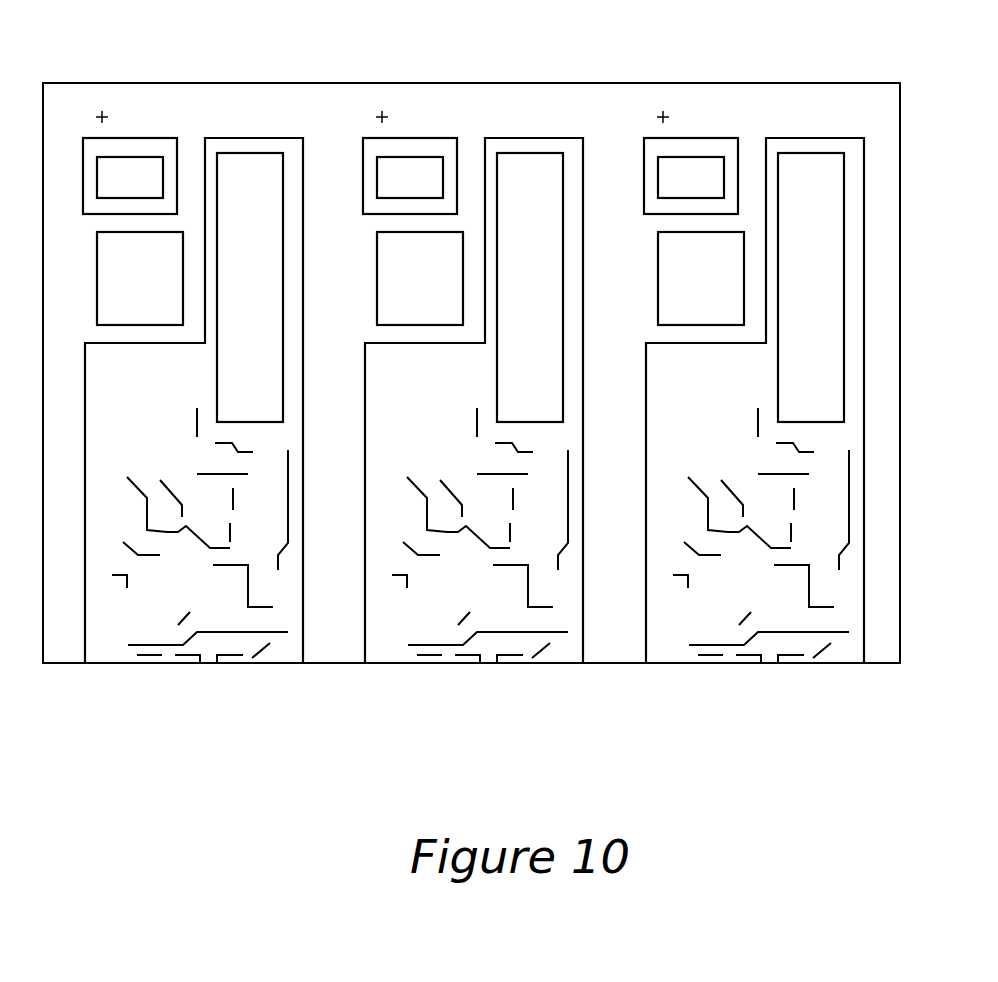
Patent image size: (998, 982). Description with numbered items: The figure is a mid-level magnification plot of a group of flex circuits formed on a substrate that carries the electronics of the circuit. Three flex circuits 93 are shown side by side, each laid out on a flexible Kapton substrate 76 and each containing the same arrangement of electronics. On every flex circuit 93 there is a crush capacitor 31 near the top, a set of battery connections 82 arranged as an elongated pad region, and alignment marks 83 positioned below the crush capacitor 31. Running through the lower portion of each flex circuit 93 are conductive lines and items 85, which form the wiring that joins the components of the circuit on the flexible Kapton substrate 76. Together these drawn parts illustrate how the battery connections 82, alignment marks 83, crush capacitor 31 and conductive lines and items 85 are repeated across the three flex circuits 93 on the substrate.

The crush capacitor 31 is at (130, 138).
The flex circuit 93 is at (202, 128).
The battery connections 82 is at (833, 215).
The alignment marks 83 is at (733, 297).
The flexible Kapton substrate 76 is at (715, 407).
The conductive lines and items 85 is at (800, 539).